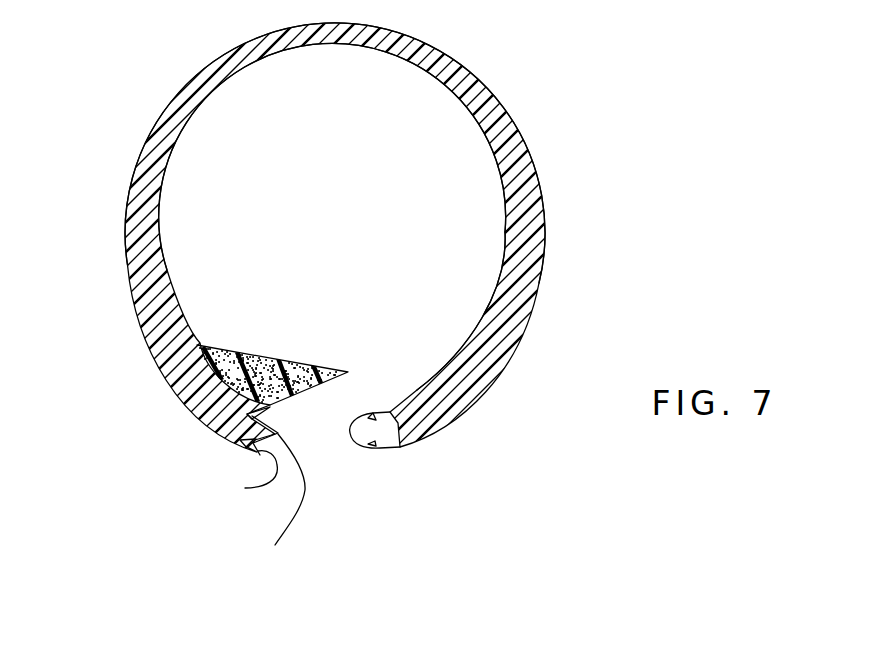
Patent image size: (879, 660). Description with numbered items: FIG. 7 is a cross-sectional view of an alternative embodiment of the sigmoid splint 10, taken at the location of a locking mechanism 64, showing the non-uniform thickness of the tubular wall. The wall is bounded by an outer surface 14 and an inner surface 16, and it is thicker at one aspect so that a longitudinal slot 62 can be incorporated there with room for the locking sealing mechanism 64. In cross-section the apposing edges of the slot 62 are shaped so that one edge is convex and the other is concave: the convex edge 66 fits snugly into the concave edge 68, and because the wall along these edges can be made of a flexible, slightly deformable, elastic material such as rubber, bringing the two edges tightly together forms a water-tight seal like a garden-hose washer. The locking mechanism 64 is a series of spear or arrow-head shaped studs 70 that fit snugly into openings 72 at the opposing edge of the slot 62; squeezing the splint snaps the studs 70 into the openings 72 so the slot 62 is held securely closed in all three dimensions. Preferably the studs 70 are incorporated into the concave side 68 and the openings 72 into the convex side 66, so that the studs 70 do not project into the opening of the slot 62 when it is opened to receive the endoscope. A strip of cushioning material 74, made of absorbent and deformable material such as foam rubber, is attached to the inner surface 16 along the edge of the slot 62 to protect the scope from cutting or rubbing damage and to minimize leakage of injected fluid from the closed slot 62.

The sigmoid splint 10 is at (530, 98).
The outer surface 14 is at (143, 148).
The inner surface 16 is at (183, 135).
The longitudinal slot 62 is at (375, 368).
The locking mechanism 64 is at (320, 478).
The convex edge 66 is at (397, 450).
The concave edge 68 is at (245, 488).
The studs 70 is at (275, 545).
The openings 72 is at (396, 397).
The strips of cushioning material 74 is at (250, 347).